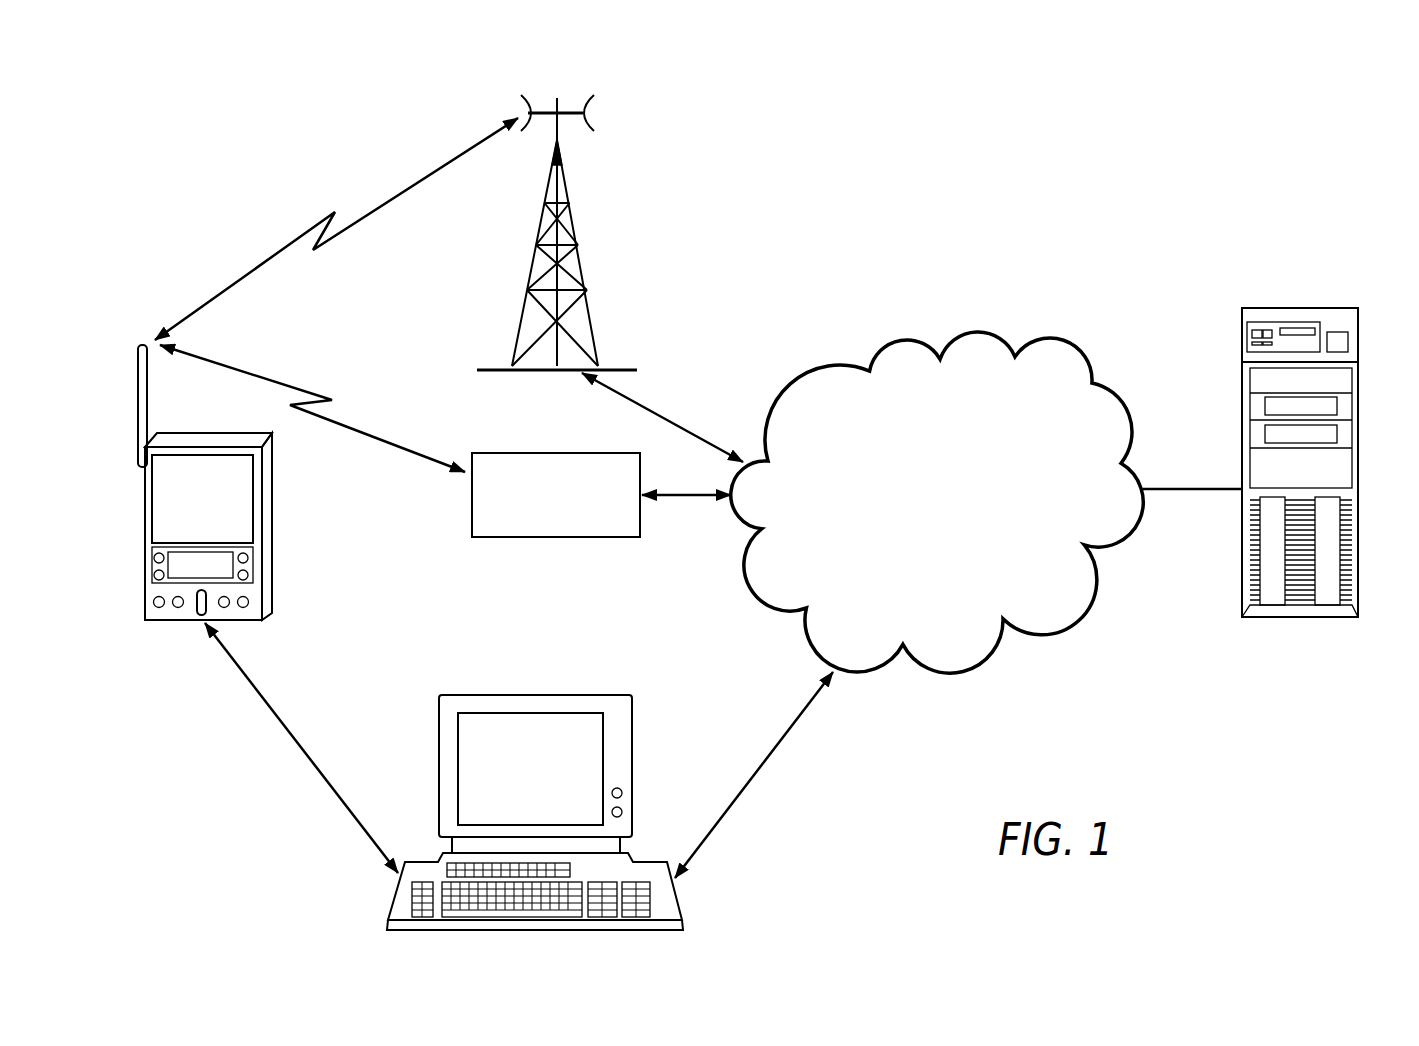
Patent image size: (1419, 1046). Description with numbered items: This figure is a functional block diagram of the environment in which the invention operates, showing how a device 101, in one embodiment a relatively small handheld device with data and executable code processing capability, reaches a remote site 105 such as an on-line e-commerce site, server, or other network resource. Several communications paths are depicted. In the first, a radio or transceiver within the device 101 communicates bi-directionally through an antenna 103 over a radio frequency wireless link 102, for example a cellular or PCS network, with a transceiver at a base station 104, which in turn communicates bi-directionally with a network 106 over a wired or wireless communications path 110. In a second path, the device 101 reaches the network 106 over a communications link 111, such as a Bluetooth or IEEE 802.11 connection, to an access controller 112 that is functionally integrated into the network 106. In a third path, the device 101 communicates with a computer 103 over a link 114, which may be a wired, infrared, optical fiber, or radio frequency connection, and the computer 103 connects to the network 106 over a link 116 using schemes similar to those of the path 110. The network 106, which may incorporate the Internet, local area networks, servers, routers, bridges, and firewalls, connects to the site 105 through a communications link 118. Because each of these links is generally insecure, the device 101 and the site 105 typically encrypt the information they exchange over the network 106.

The device 101 is at (267, 575).
The radio frequency wireless link 102 is at (435, 168).
The antenna / computer 103 is at (133, 388).
The base station 104 is at (559, 105).
The site 105 is at (1290, 617).
The network 106 is at (1123, 395).
The communications path 110 is at (687, 428).
The communications link 111 is at (288, 383).
The access controller 112 is at (577, 537).
The link 114 is at (285, 725).
The link 116 is at (760, 770).
The communications link 118 is at (1182, 492).